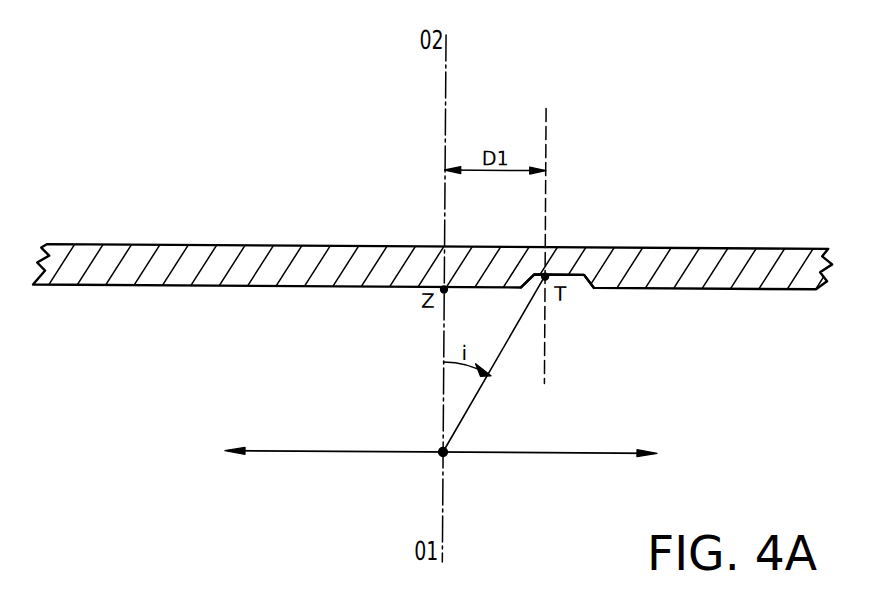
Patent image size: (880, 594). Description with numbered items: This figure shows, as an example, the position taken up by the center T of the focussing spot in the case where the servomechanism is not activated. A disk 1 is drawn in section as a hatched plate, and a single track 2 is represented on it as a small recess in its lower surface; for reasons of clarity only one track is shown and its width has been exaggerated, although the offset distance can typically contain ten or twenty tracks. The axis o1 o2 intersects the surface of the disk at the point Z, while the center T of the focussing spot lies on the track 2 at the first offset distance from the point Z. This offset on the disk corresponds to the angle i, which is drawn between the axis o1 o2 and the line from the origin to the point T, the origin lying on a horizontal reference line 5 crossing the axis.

The plate / panel 1 is at (95, 260).
The notch (recess) in plate 2 is at (573, 280).
The horizontal reference axis 5 is at (553, 453).